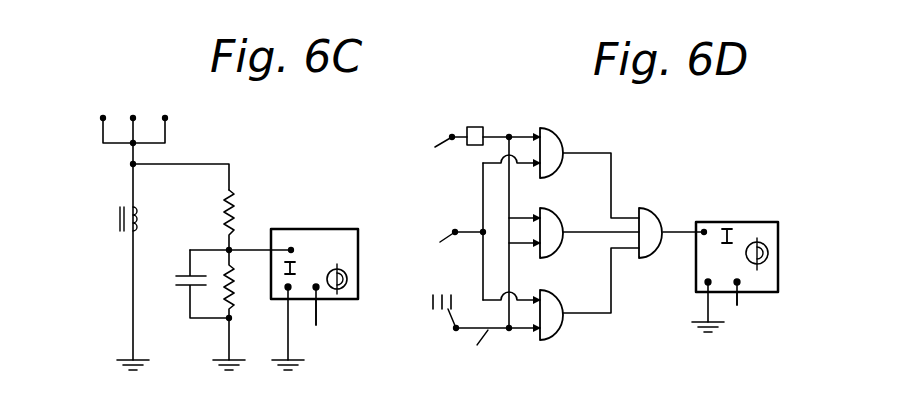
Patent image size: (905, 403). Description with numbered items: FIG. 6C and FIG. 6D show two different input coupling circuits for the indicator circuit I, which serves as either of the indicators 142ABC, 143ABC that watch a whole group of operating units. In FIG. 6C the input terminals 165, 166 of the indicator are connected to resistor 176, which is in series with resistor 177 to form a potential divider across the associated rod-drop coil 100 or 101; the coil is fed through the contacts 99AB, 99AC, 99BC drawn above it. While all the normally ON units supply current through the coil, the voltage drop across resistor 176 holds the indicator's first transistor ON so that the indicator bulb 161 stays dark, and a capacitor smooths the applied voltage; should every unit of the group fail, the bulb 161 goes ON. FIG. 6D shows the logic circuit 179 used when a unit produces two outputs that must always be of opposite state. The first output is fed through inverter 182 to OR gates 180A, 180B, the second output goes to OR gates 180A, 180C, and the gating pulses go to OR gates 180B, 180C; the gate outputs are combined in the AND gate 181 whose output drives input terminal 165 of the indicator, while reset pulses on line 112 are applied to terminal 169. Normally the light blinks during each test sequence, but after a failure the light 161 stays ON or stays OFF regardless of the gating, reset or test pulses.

In FIG. 6C, the switch contact AB 99AB is at (103, 118).
In FIG. 6C, the switch contact AC 99AC is at (133, 118).
In FIG. 6C, the switch contact BC 99BC is at (165, 118).
In FIG. 6C, the rod-drop coil 100 is at (138, 213).
In FIG. 6C, the rod-drop coil 101 is at (162, 220).
In FIG. 6C, the resistor 177 is at (230, 204).
In FIG. 6C, the resistor 176 is at (229, 276).
In FIG. 6C, the input terminal 166 is at (229, 318).
In FIG. 6C, the indicator 142ABC is at (362, 270).
In FIG. 6C, the indicator 143ABC is at (333, 233).
In FIG. 6C, the input terminal 165 is at (292, 249).
In FIG. 6D, the input terminal 165 is at (705, 231).
In FIG. 6C, the terminal 169 is at (317, 285).
In FIG. 6D, the terminal 169 is at (736, 280).
In FIG. 6C, the indicator bulb 161 is at (349, 277).
In FIG. 6D, the indicator bulb 161 is at (765, 263).
In FIG. 6C, the reset line 112 is at (318, 315).
In FIG. 6D, the reset line 112 is at (738, 297).
In FIG. 6D, the logic circuit 179 is at (575, 98).
In FIG. 6D, the inverter 182 is at (481, 127).
In FIG. 6D, the OR gate 180A is at (553, 136).
In FIG. 6D, the OR gate 180B is at (546, 212).
In FIG. 6D, the OR gate 180C is at (548, 300).
In FIG. 6D, the AND gate 181 is at (650, 212).